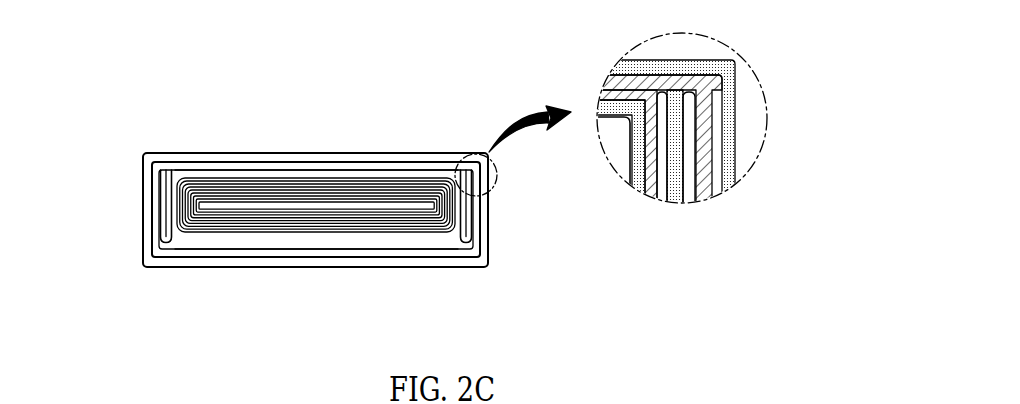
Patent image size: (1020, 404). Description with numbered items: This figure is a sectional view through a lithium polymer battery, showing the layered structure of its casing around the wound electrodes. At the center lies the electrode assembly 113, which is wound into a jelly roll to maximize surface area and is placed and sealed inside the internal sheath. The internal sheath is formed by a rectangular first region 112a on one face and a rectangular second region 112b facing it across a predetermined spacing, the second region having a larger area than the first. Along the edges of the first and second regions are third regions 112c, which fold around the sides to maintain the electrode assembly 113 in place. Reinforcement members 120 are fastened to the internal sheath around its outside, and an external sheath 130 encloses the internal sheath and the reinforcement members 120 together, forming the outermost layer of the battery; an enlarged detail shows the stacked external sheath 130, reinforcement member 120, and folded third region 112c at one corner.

The external sheath 130 is at (182, 157).
The reinforcement member 120 is at (230, 168).
The first region 112a is at (309, 170).
The second region 112b is at (296, 250).
The third region 112c is at (146, 214).
The electrode assembly 113 is at (398, 192).